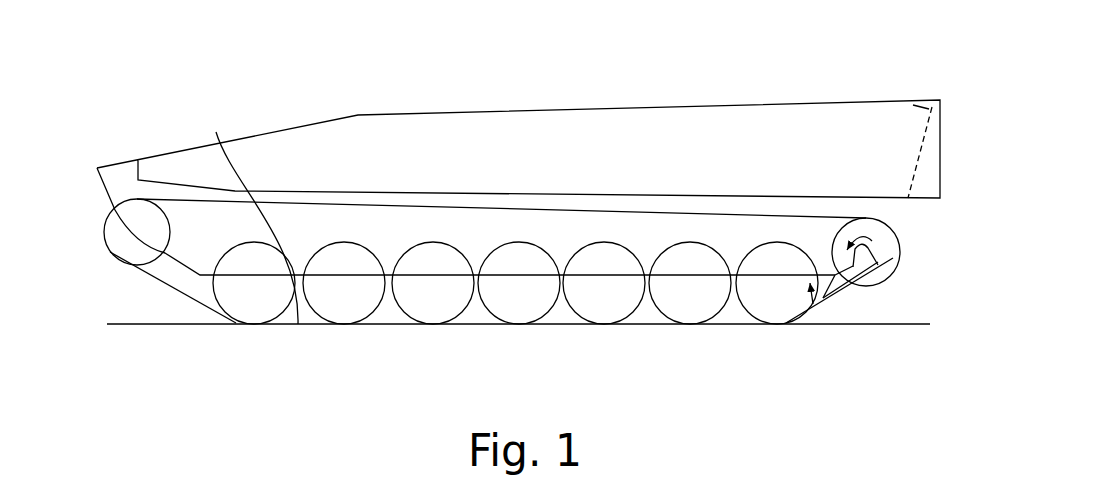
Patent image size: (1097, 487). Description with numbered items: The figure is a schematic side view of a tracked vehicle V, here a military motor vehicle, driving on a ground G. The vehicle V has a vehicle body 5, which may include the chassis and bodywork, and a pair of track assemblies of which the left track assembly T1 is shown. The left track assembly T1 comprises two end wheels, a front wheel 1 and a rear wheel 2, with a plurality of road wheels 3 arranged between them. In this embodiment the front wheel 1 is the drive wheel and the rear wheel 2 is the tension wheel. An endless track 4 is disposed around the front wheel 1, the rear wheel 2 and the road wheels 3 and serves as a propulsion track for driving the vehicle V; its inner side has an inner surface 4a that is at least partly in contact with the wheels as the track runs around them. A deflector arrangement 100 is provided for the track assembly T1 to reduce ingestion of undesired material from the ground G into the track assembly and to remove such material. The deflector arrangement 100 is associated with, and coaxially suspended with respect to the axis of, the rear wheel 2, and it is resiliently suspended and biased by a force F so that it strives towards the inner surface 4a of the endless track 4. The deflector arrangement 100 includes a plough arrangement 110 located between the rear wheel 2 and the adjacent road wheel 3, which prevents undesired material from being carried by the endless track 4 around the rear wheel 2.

The front wheel 1 is at (108, 249).
The rear wheel 2 is at (897, 272).
The road wheels 3 is at (228, 316).
The endless track 4 is at (198, 302).
The inner surface 4a is at (251, 212).
The vehicle body 5 is at (709, 105).
The deflector arrangement 100 is at (861, 289).
The plough arrangement 110 is at (826, 311).
The ground G is at (140, 324).
The left track assembly T1 is at (173, 294).
The force F is at (868, 243).
The tracked vehicle V is at (368, 50).